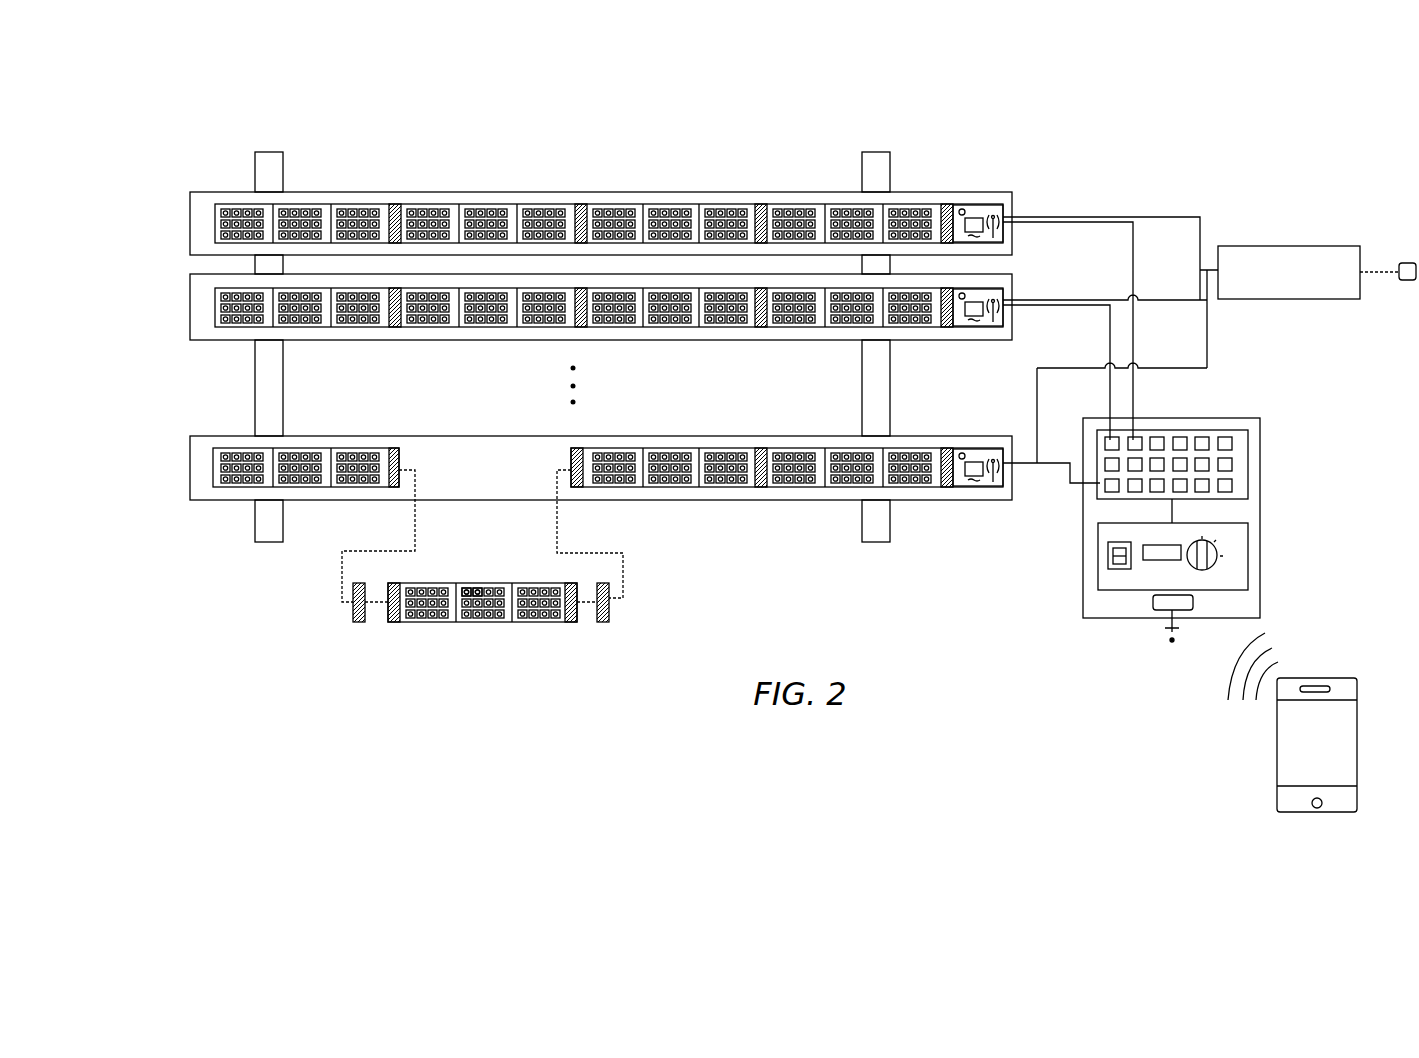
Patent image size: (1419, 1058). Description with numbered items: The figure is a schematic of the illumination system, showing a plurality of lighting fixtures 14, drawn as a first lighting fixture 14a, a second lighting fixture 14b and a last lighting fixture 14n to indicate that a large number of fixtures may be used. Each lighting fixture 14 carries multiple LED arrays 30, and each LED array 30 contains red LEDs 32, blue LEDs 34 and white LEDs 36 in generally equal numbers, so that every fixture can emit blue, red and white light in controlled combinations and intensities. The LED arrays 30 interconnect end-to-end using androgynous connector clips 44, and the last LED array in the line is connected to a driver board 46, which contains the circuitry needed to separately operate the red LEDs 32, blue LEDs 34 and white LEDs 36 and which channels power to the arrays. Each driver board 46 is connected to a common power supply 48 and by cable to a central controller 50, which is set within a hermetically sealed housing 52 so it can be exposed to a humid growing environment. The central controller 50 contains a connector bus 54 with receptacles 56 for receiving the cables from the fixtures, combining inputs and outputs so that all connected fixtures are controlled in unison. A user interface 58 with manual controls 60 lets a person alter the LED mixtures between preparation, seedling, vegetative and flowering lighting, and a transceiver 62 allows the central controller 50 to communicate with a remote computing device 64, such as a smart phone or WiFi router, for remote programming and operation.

The lighting fixture 14 is at (685, 192).
The lighting fixture 14a is at (558, 192).
The lighting fixture 14b is at (190, 333).
The lighting fixture 14n is at (558, 494).
The LED array 30 is at (503, 609).
The red LED 32 is at (462, 592).
The blue LED 34 is at (478, 592).
The white LED 36 is at (504, 605).
The androgynous connector clip 44 is at (608, 622).
The driver board 46 is at (968, 490).
The power supply 48 is at (1290, 246).
The central controller 50 is at (1235, 540).
The hermetically sealed housing 52 is at (1181, 515).
The connector bus 54 is at (1208, 430).
The receptacle 56 is at (1232, 443).
The user interface 58 is at (1158, 556).
The manual control 60 is at (1212, 563).
The transceiver 62 is at (1170, 602).
The remote computing device 64 is at (1272, 745).